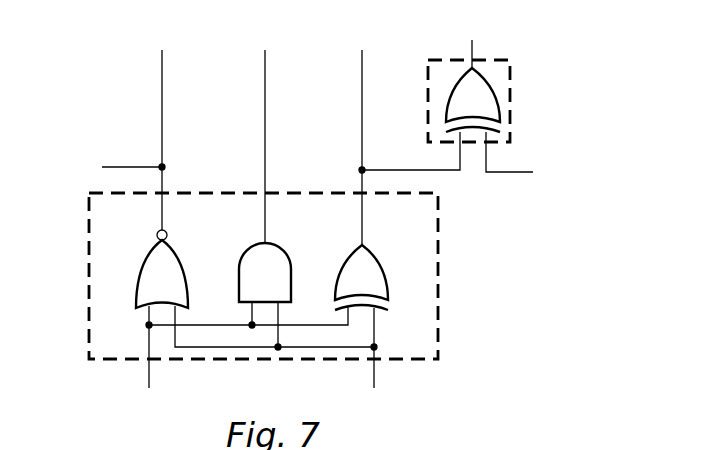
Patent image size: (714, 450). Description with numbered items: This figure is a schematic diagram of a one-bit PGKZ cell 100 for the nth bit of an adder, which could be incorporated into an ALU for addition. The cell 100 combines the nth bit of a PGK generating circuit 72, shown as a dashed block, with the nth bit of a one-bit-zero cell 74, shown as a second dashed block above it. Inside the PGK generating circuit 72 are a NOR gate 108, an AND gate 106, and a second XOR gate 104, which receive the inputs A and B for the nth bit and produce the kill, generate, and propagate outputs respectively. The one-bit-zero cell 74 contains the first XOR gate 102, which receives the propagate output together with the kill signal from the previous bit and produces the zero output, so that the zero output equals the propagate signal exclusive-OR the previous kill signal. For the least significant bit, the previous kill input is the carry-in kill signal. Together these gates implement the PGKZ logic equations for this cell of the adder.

The one-bit PGKZ cell 100 is at (94, 107).
The PGK generating circuit 72 is at (139, 236).
The one-bit-zero cell 74 is at (510, 62).
The first XOR gate 102 is at (483, 105).
The second XOR gate 104 is at (366, 259).
The AND gate 106 is at (276, 258).
The NOR gate 108 is at (176, 259).